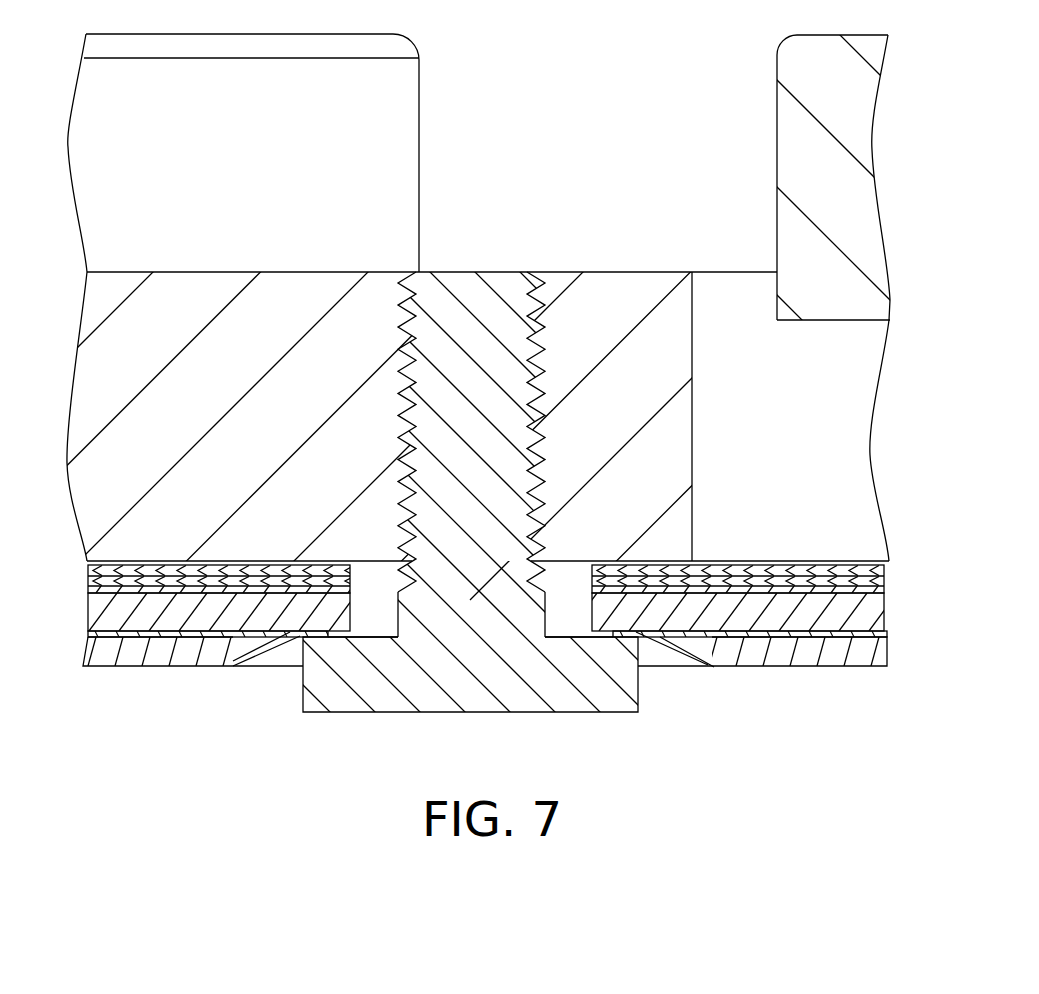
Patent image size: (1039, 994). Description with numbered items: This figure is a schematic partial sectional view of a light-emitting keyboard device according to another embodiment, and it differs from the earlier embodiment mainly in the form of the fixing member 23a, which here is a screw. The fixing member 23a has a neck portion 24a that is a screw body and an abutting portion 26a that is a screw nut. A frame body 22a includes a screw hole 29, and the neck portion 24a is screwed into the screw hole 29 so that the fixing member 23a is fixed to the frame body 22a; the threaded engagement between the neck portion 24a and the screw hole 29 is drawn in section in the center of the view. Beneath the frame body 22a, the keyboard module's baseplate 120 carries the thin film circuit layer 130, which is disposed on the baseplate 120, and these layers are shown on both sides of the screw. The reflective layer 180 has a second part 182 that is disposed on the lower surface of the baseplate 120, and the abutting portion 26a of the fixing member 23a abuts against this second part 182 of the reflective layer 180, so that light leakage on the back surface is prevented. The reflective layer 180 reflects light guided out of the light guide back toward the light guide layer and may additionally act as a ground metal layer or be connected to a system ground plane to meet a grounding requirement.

The frame body 22a is at (684, 488).
The fixing member 23a is at (489, 505).
The neck portion 24a is at (497, 318).
The abutting portion 26a is at (591, 702).
The screw hole 29 is at (407, 370).
The baseplate 120 is at (888, 612).
The thin film circuit layer 130 is at (888, 590).
The reflective layer 180 is at (694, 650).
The second part 182 is at (300, 636).